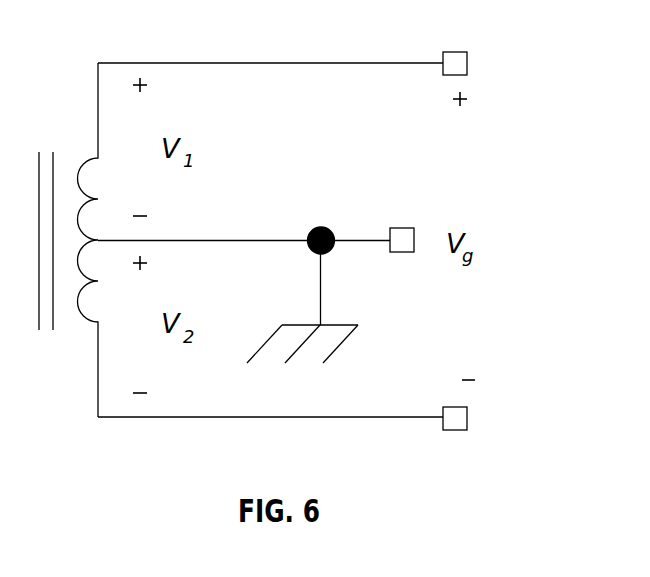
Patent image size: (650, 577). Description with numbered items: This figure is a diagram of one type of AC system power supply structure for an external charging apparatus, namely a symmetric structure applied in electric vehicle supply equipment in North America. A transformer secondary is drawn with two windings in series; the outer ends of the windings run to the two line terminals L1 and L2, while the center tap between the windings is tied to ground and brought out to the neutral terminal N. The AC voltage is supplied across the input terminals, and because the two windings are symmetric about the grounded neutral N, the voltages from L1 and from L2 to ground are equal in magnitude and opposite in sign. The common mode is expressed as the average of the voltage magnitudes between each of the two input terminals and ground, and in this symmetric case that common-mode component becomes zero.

The first line terminal L1 is at (476, 66).
The second line terminal L2 is at (476, 421).
The neutral terminal N is at (402, 256).